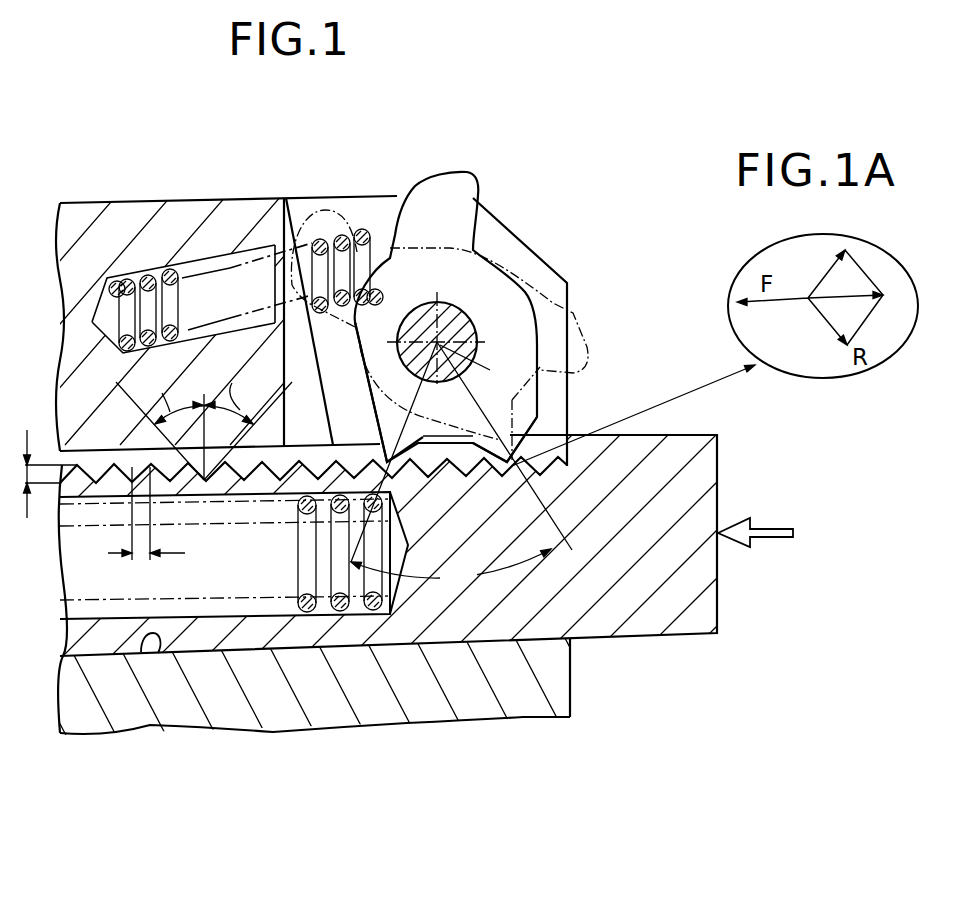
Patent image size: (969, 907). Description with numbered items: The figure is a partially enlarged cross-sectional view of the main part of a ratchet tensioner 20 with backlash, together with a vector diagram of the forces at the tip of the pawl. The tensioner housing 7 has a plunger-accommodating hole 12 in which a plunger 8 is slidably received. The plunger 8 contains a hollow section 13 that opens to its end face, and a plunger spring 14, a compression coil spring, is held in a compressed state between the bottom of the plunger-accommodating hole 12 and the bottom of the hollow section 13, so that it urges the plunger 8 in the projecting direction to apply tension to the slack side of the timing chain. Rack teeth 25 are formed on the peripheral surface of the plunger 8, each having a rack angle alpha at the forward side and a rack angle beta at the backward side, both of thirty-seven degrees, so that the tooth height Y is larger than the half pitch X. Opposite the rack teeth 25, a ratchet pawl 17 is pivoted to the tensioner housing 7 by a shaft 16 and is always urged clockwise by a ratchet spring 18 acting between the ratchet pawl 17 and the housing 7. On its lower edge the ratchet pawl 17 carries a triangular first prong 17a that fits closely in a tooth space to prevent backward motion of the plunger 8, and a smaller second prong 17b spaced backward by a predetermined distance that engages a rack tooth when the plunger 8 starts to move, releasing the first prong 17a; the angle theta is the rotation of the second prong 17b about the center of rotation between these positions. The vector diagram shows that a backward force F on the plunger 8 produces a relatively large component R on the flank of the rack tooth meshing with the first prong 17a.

The tensioner housing 7 is at (253, 208).
The plunger 8 is at (484, 447).
The plunger-accommodating hole 12 is at (150, 652).
The hollow section 13 is at (207, 578).
The plunger spring 14 is at (297, 515).
The shaft 16 is at (470, 313).
The ratchet pawl 17 is at (452, 180).
The first prong 17a is at (513, 468).
The second prong 17b is at (405, 480).
The ratchet spring 18 is at (147, 279).
The ratchet tensioner 20 is at (180, 195).
The rack teeth 25 is at (267, 490).